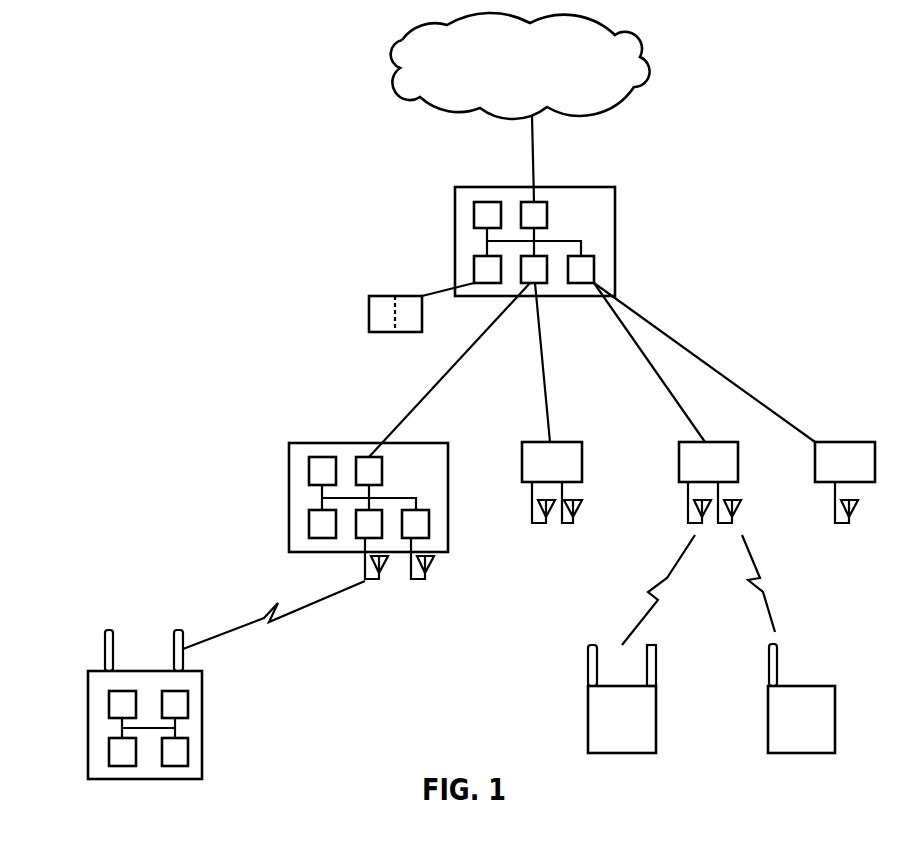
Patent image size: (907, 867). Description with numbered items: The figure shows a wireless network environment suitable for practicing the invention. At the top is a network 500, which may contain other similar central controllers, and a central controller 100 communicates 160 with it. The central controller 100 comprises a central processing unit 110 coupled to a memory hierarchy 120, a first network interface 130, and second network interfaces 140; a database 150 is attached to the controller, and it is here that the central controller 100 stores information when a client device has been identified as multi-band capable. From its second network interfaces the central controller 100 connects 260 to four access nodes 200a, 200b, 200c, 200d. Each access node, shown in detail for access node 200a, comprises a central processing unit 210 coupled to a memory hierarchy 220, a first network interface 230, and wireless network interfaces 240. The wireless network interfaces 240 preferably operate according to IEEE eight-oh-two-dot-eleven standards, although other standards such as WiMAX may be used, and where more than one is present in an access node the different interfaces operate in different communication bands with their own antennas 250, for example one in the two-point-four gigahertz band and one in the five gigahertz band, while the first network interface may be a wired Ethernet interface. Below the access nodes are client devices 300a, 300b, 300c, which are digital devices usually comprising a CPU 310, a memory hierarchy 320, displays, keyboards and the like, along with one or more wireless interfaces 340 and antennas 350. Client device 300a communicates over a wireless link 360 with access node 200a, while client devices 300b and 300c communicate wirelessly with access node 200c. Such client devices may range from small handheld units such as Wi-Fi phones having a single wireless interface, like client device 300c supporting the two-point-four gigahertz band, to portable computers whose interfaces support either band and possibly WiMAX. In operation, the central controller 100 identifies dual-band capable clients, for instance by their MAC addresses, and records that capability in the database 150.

The network 500 is at (537, 75).
The communication link 160 is at (570, 161).
The central controller 100 is at (455, 187).
The central processing unit 110 is at (474, 217).
The memory hierarchy 120 is at (474, 269).
The first network interface 130 is at (585, 205).
The second network interfaces 140 is at (573, 283).
The database 150 is at (369, 310).
The connections 260 is at (423, 391).
The access node 200a is at (289, 443).
The access node 200b is at (523, 442).
The access node 200c is at (679, 442).
The access node 200d is at (828, 416).
The central processing unit 210 is at (309, 472).
The memory hierarchy 220 is at (309, 524).
The first network interface 230 is at (422, 459).
The wireless network interfaces 240 is at (380, 538).
The antennas 250 is at (368, 611).
The wireless link 360 is at (298, 650).
The client device 300a is at (88, 671).
The client device 300b is at (588, 686).
The client device 300c is at (768, 693).
The CPU 310 is at (122, 766).
The memory hierarchy 320 is at (175, 766).
The wireless interfaces 340 is at (109, 716).
The antennas 350 is at (133, 621).